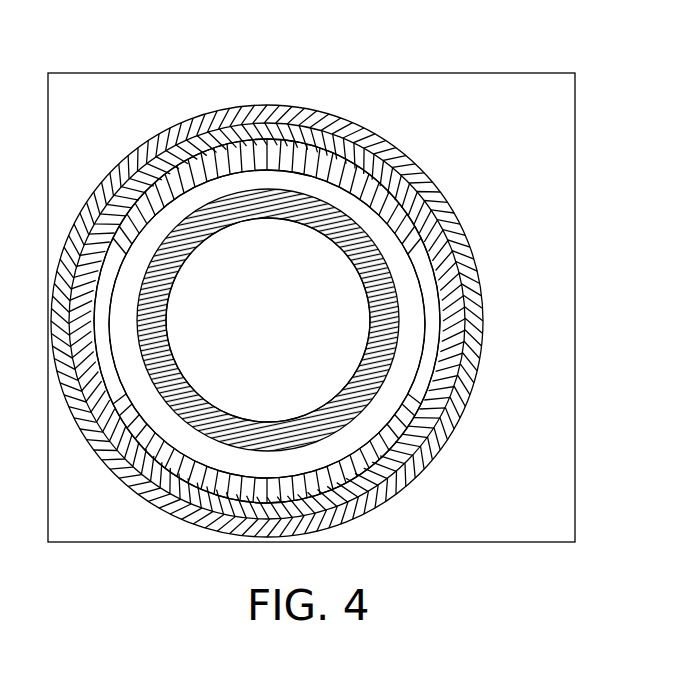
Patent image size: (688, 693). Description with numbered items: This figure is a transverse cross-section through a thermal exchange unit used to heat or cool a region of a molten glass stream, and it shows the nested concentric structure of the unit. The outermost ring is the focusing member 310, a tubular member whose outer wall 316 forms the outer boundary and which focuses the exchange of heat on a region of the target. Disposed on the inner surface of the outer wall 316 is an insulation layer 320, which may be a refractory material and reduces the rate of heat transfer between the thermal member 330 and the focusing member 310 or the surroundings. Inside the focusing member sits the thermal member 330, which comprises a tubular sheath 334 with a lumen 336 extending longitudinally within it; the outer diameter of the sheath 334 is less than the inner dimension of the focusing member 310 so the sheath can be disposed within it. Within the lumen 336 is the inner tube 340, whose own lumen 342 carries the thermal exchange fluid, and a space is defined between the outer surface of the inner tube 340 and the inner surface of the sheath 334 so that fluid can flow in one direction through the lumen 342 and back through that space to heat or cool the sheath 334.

The focusing member 310 is at (267, 314).
The outer wall 316 is at (252, 321).
The insulation layer 320 is at (281, 301).
The thermal member 330 is at (322, 321).
The tubular sheath 334 is at (338, 321).
The lumen 336 is at (337, 324).
The inner tube 340 is at (319, 296).
The lumen 342 is at (351, 299).